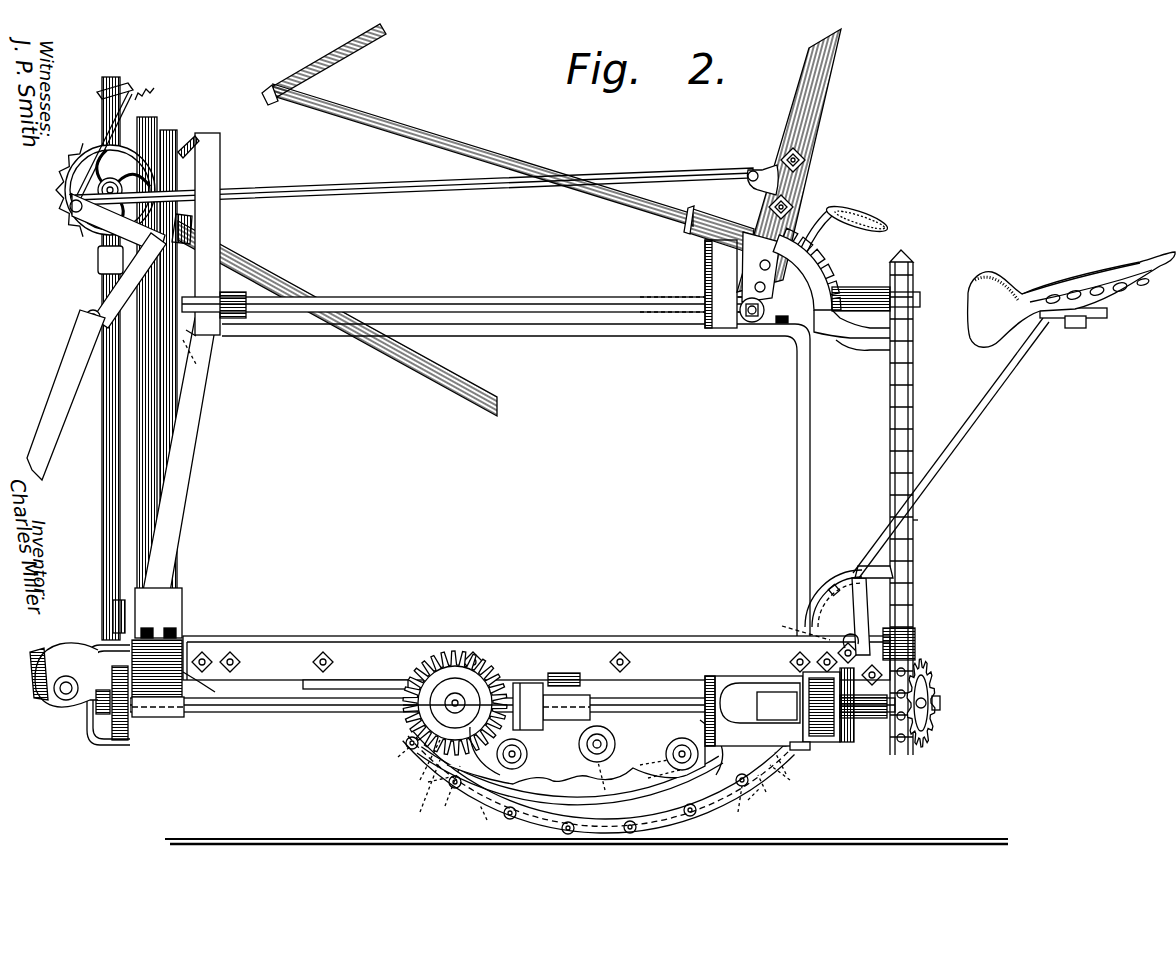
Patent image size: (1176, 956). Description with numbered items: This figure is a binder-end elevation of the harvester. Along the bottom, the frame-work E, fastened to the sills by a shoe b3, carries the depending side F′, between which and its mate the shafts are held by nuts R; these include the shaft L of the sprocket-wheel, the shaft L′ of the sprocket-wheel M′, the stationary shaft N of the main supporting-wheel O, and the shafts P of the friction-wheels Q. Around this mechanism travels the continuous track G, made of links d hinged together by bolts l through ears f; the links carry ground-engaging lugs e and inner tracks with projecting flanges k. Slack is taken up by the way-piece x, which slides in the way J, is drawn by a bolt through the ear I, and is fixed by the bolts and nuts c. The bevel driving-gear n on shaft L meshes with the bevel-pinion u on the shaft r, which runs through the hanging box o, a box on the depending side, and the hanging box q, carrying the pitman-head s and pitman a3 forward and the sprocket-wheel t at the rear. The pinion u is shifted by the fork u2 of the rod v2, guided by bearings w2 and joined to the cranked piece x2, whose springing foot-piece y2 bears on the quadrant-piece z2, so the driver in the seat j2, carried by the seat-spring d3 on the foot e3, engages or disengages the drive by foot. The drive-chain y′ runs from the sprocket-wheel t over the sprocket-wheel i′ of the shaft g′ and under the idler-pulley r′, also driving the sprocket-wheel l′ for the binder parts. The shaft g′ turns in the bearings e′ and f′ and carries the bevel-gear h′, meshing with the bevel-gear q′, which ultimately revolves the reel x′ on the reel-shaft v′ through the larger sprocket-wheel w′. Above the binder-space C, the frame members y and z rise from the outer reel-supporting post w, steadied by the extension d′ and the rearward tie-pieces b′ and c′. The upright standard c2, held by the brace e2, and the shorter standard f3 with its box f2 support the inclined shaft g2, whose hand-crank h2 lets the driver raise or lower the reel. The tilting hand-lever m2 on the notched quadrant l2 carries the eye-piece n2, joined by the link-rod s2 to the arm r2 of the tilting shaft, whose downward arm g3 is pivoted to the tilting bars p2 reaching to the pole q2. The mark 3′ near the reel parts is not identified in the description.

The outer reel-supporting post w is at (140, 463).
The reel x′ is at (118, 440).
The outward and downward extension of the forward tie-piece d′ is at (181, 448).
The upright standard c2 is at (199, 234).
The brace e2 is at (154, 612).
The binder-space C is at (366, 645).
The frame-work E is at (537, 664).
The depending side F′ is at (340, 682).
The shaft r is at (255, 712).
The bevel driving-gear n is at (430, 680).
The fork u2 is at (522, 690).
The superimposed bearings w2 is at (578, 669).
The nuts R is at (599, 785).
The main supporting-wheel O is at (570, 775).
The friction-wheels Q is at (596, 758).
The bevel-pinion u is at (512, 746).
The shafts of the friction-wheels P is at (578, 748).
The shaft of the main supporting-wheel N is at (648, 764).
The projecting flanges k is at (635, 786).
The links d is at (562, 791).
The shaft of the sprocket-wheel L is at (420, 769).
The lugs e is at (607, 775).
The continuous track G is at (420, 795).
The bolts l is at (597, 794).
The sprocket-wheel M′ is at (784, 779).
The ears f is at (762, 791).
The way-piece x is at (754, 711).
The shaft of the sprocket-wheel M′ L′ is at (745, 690).
The bolts and nuts of the slots c is at (777, 708).
The rod v2 is at (720, 690).
The ways J is at (818, 740).
The ears I is at (842, 740).
The outer member of the frame-work z is at (800, 750).
The hanging box q is at (878, 718).
The pitman a3 is at (110, 690).
The pitman-head s is at (124, 742).
The pole q2 is at (58, 670).
The hanging box o is at (170, 718).
The shoe b3 is at (205, 682).
The tie-piece b′ is at (700, 338).
The tie-piece c′ is at (776, 326).
The shaft g′ is at (540, 300).
The bearing e′ is at (233, 293).
The bevel-gear h′ is at (194, 356).
The link-rod s2 is at (414, 186).
The inclined shaft g2 is at (477, 125).
The bevel-gear q′ is at (185, 292).
The box f2 is at (708, 222).
The shorter standard f3 is at (712, 264).
The tilting hand-lever m2 is at (818, 110).
The eye-piece n2 is at (752, 170).
The hand-crank h2 is at (848, 214).
The notched quadrant l2 is at (840, 282).
The bearing f′ is at (862, 290).
The sprocket-wheel i′ is at (901, 492).
The sprocket drive-chain y′ is at (923, 519).
The sprocket-wheel t is at (900, 717).
The sprocket-wheel l′ is at (923, 703).
The idler-pulley r′ is at (915, 638).
The foot e3 is at (868, 630).
The springing foot-piece y2 is at (894, 572).
The quadrant-piece z2 is at (836, 592).
The arm r2 is at (110, 240).
The cranked piece x2 is at (796, 625).
The seat-spring d3 is at (990, 392).
The seat j2 is at (1086, 272).
The chain sprocket 3′ is at (97, 97).
The reel-shaft v′ is at (78, 228).
The inner member of the frame-work y is at (120, 229).
The larger sprocket-wheel w′ is at (97, 252).
The downward arm g3 is at (120, 300).
The tilting bars p2 is at (62, 406).